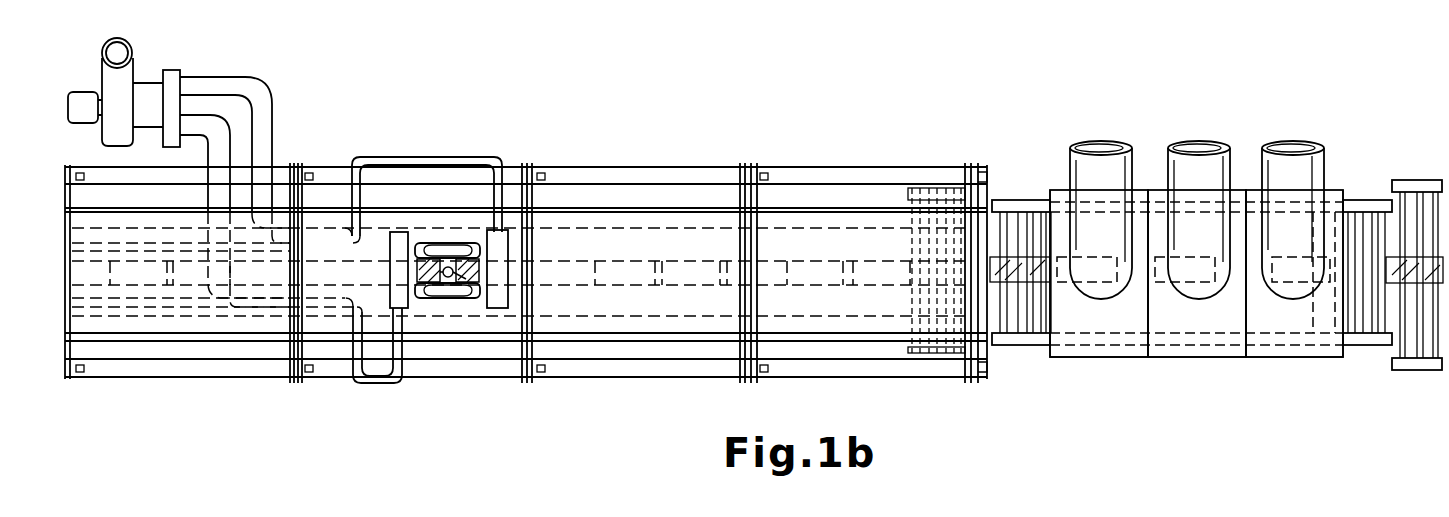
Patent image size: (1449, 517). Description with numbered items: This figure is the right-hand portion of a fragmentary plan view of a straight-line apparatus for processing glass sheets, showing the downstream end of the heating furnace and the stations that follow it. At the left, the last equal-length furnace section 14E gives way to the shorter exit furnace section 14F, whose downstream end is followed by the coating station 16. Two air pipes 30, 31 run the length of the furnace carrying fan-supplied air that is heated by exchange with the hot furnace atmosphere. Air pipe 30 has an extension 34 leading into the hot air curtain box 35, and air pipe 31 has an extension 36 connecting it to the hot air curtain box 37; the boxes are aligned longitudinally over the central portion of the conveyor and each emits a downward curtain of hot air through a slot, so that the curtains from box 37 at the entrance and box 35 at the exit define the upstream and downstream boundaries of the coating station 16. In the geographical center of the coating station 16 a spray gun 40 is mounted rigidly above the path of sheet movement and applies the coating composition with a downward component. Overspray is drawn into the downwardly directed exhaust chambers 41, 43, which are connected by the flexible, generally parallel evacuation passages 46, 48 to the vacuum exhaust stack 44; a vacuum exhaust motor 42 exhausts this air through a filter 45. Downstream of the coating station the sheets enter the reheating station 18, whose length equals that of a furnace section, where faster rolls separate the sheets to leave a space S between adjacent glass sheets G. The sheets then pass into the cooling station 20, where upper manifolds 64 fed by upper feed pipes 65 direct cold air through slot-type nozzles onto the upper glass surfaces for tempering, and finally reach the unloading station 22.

The coating station 16 is at (437, 150).
The reheating station 18 is at (712, 163).
The cooling station 20 is at (1050, 178).
The unloading station 22 is at (1416, 178).
The air pipe 30 is at (108, 243).
The air pipe 31 is at (132, 307).
The extension 34 is at (405, 158).
The hot air curtain box 35 is at (506, 250).
The extension 36 is at (401, 380).
The hot air curtain box 37 is at (396, 237).
The spray gun 40 is at (486, 282).
The exhaust chamber 41 is at (462, 253).
The vacuum exhaust motor 42 is at (85, 93).
The exhaust chamber 43 is at (463, 292).
The vacuum exhaust stack 44 is at (127, 40).
The filter 45 is at (172, 70).
The evacuation passage 46 is at (208, 77).
The evacuation passage 48 is at (206, 150).
The upper manifold 64 is at (1113, 324).
The upper feed pipe 65 is at (1172, 147).
The glass sheet G is at (778, 260).
The space S is at (788, 284).
The furnace section 14E is at (67, 408).
The exit furnace section 14F is at (379, 412).